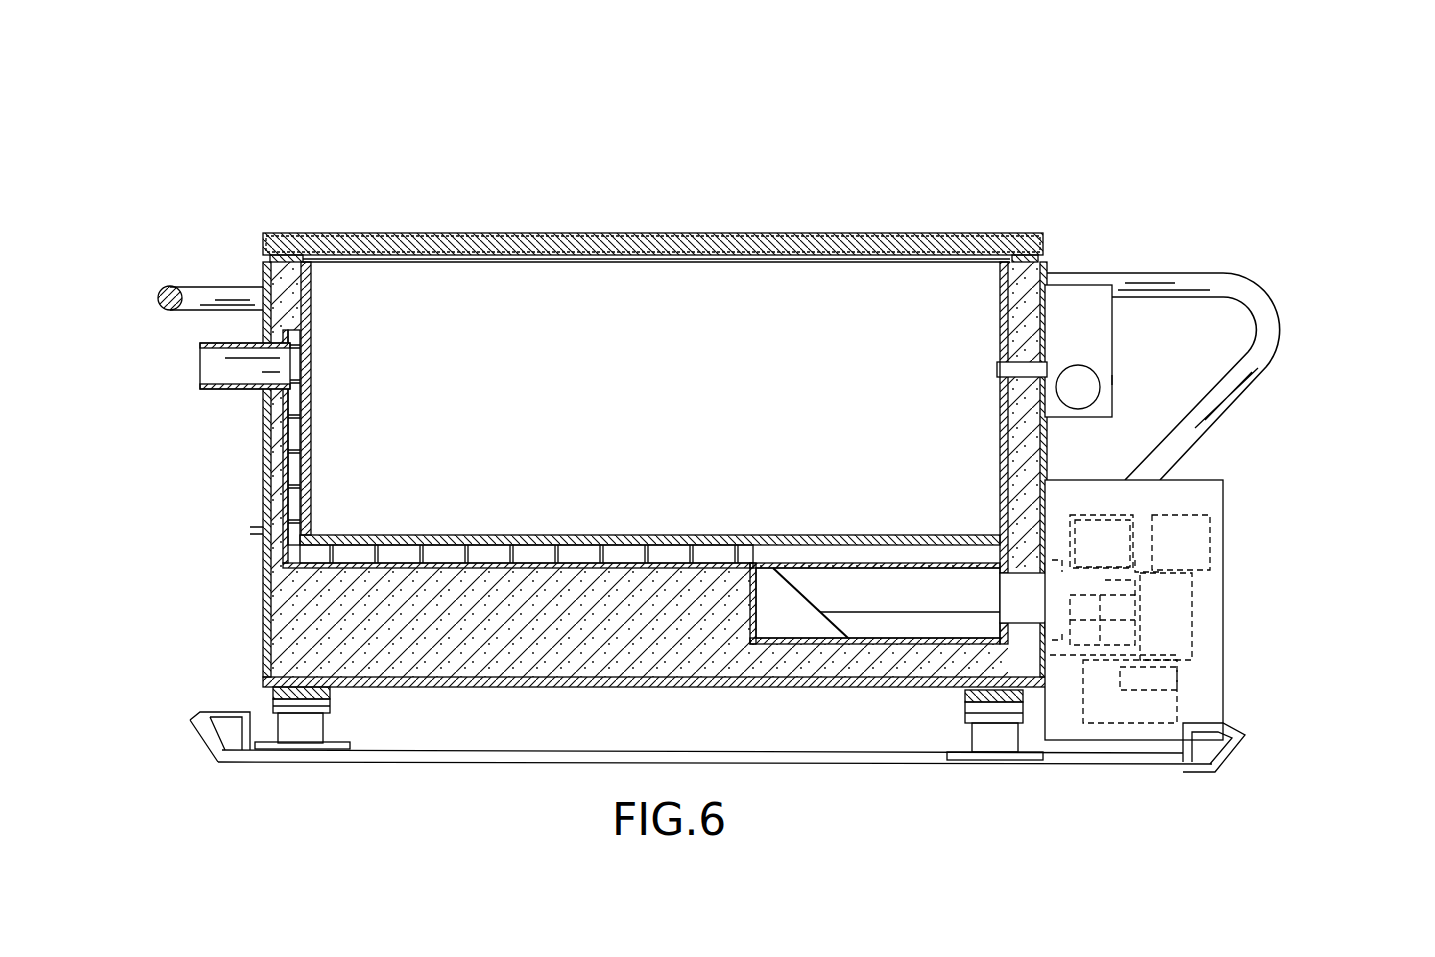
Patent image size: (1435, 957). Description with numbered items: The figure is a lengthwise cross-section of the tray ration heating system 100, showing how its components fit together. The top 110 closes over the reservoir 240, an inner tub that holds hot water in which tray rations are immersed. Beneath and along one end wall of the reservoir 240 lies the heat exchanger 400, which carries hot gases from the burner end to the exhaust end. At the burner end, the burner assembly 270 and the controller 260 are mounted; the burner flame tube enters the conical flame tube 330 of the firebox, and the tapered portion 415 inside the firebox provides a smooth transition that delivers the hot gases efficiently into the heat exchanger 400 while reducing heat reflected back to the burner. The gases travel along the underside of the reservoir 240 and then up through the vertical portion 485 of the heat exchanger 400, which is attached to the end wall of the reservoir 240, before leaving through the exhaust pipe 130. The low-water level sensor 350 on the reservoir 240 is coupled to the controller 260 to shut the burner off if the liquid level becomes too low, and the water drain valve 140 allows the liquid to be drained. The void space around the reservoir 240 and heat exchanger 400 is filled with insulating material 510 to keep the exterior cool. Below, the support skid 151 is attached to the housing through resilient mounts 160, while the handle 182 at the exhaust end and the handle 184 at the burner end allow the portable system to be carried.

The tray ration heating system 100 is at (1142, 90).
The top 110 is at (583, 233).
The exhaust pipe 130 is at (210, 390).
The water drain valve 140 is at (262, 523).
The support skid 151 is at (823, 765).
The resilient mounts 160 is at (297, 730).
The handle 182 is at (213, 287).
The handle 184 is at (1215, 282).
The reservoir 240 is at (695, 392).
The controller 260 is at (1113, 380).
The burner assembly 270 is at (1222, 578).
The conical flame tube 330 is at (1020, 620).
The low-water level sensor 350 is at (1042, 368).
The heat exchanger 400 is at (530, 570).
The tapered portion 415 is at (875, 603).
The vertical portion 485 is at (292, 453).
The insulating material 510 is at (335, 637).